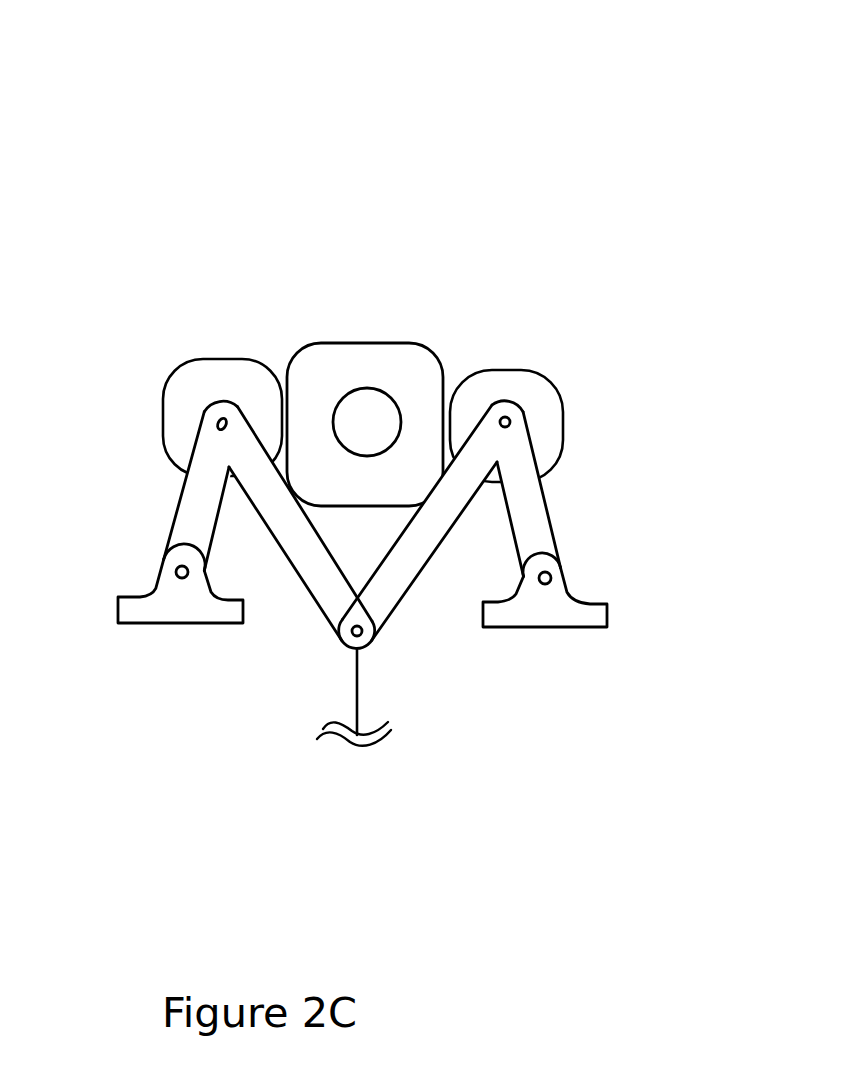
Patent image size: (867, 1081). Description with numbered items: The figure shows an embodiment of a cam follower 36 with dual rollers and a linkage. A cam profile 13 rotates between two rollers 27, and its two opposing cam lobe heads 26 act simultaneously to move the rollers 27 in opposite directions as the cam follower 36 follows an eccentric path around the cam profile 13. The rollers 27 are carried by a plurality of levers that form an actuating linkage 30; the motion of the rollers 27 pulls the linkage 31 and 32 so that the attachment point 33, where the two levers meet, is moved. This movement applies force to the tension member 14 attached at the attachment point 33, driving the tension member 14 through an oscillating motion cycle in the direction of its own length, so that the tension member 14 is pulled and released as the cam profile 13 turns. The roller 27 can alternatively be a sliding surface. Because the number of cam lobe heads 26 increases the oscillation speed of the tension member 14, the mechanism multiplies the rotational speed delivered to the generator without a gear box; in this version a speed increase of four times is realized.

The cam follower 36 is at (315, 183).
The cam profile 13 is at (376, 343).
The cam lobe head 26 is at (445, 369).
The roller 27 is at (178, 380).
The linkage 31 is at (310, 588).
The linkage 32 is at (430, 557).
The actuating linkage 30 is at (378, 605).
The attachment point 33 is at (340, 645).
The tension member 14 is at (360, 703).